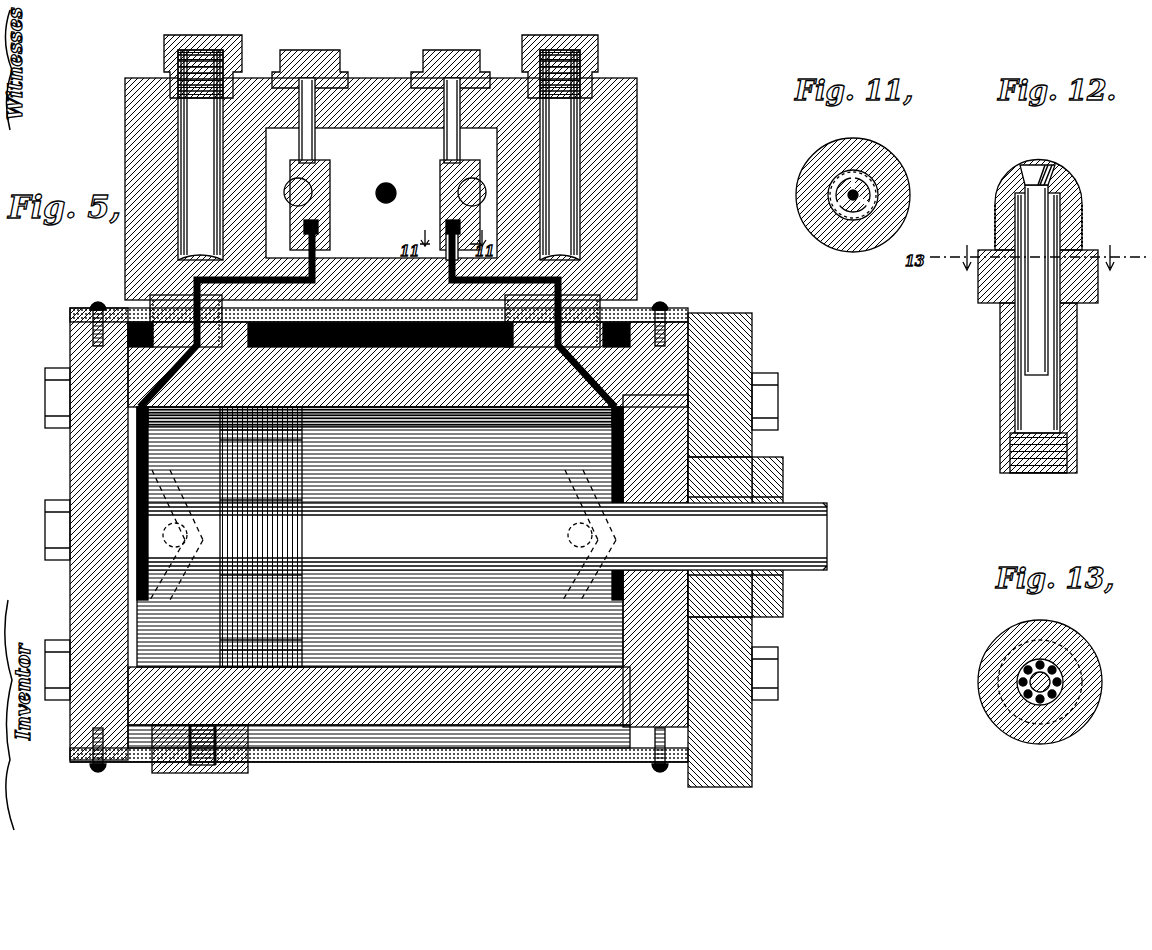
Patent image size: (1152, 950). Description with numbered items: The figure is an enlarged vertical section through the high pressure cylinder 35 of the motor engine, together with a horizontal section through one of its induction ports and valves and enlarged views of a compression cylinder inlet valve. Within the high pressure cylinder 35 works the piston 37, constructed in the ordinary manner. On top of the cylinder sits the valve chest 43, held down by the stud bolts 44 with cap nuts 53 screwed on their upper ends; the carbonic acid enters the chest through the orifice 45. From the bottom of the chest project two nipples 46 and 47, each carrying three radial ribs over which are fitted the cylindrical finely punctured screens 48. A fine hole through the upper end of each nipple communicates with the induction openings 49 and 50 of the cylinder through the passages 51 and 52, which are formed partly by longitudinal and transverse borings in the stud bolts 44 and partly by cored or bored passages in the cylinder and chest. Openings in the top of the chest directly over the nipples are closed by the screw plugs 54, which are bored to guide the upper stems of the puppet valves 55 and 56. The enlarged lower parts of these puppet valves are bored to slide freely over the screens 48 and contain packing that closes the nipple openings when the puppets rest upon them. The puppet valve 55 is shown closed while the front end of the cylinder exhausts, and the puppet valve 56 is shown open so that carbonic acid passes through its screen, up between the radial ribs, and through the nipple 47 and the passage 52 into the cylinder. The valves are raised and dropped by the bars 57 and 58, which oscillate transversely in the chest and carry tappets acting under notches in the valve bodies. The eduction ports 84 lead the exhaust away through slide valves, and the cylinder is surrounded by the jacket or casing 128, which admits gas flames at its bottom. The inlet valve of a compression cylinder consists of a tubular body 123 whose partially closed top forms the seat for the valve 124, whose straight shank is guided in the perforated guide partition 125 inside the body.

In FIG. 5, the high pressure cylinder 35 is at (72, 478).
In FIG. 5, the piston 37 is at (261, 537).
In FIG. 5, the valve chest 43 is at (381, 193).
In FIG. 5, the stud bolts 44 is at (195, 190).
In FIG. 5, the orifice 45 is at (378, 200).
In FIG. 5, the nipple 46 is at (440, 240).
In FIG. 11, the nipple 46 is at (860, 192).
In FIG. 5, the nipple 47 is at (316, 276).
In FIG. 5, the finely punctured screen 48 is at (375, 250).
In FIG. 11, the finely punctured screen 48 is at (865, 185).
In FIG. 5, the induction opening 49 is at (626, 415).
In FIG. 5, the induction opening 50 is at (135, 420).
In FIG. 5, the passage 51 is at (580, 290).
In FIG. 5, the passage 52 is at (188, 282).
In FIG. 5, the cap nuts 53 is at (381, 53).
In FIG. 5, the screw plugs 54 is at (381, 55).
In FIG. 5, the puppet valve 55 is at (444, 158).
In FIG. 11, the puppet valve 55 is at (800, 170).
In FIG. 5, the puppet valve 56 is at (316, 158).
In FIG. 5, the bar 57 is at (475, 185).
In FIG. 5, the bar 58 is at (300, 185).
In FIG. 5, the eduction ports 84 is at (383, 539).
In FIG. 5, the jacket or casing 128 is at (452, 762).
In FIG. 12, the tubular body 123 is at (1073, 370).
In FIG. 13, the tubular body 123 is at (1053, 676).
In FIG. 12, the valve 124 is at (1052, 161).
In FIG. 13, the valve 124 is at (1060, 690).
In FIG. 12, the perforated guide partition 125 is at (1013, 310).
In FIG. 13, the perforated guide partition 125 is at (1050, 675).